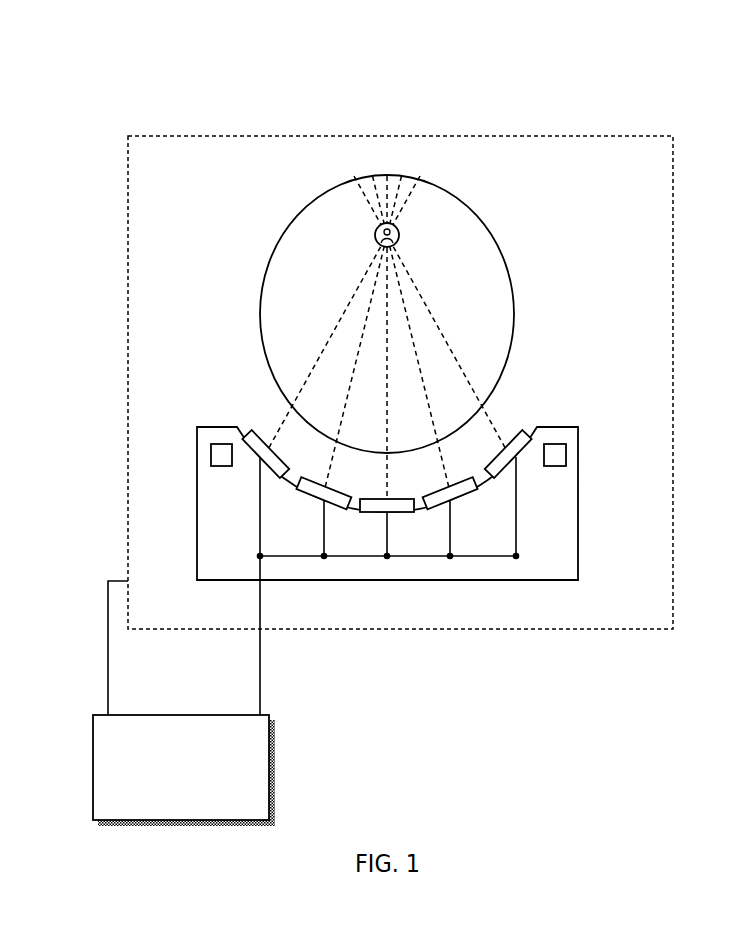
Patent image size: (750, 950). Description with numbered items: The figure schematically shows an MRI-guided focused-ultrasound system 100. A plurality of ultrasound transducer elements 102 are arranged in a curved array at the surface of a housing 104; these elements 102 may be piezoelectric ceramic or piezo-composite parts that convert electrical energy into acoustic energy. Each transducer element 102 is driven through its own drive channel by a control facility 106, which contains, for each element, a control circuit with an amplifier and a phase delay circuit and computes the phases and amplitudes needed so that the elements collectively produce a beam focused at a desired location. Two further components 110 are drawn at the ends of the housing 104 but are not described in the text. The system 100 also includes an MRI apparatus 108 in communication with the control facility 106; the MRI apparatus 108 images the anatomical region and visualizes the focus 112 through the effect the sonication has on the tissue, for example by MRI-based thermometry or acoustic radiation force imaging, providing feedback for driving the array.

The MRI-guided focused-ultrasound system 100 is at (640, 80).
The ultrasound transducer elements 102 is at (525, 432).
The housing 104 is at (578, 546).
The control facility 106 is at (148, 715).
The MRI apparatus 108 is at (181, 136).
The sensor units 110 is at (211, 455).
The focus 112 is at (399, 236).